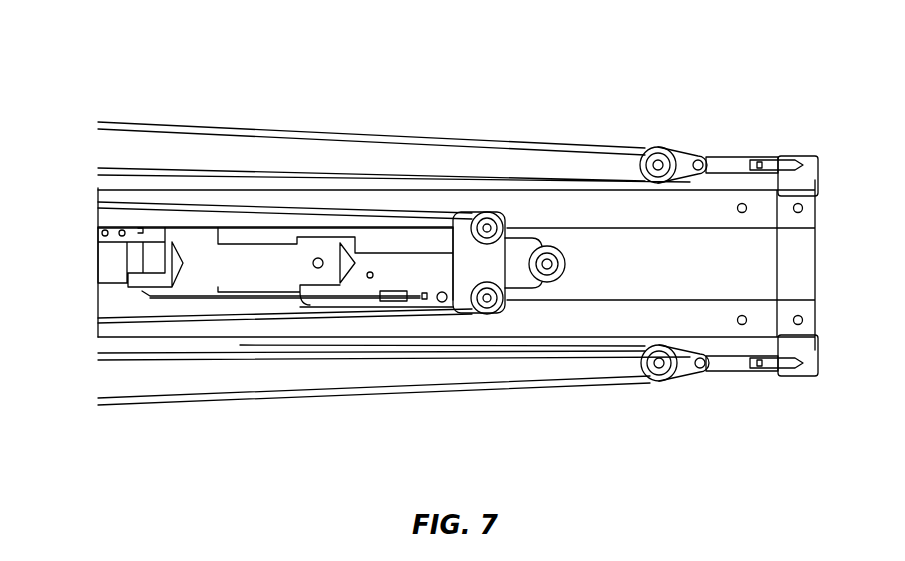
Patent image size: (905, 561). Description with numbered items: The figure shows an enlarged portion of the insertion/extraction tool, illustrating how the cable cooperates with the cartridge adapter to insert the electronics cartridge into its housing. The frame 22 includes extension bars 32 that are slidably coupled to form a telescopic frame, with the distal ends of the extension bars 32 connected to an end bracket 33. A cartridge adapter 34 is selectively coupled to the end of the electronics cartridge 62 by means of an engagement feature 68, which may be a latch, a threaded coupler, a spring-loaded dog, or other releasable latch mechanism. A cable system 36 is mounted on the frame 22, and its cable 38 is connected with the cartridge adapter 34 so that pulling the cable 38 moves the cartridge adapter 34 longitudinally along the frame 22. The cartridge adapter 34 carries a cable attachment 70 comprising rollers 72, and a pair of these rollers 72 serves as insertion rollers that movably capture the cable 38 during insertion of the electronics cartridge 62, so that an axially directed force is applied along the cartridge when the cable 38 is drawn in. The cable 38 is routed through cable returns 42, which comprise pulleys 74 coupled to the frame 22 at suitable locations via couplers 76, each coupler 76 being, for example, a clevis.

The frame 22 is at (118, 184).
The extension bars 32 is at (677, 308).
The end bracket 33 is at (808, 158).
The cartridge adapter 34 is at (331, 316).
The cable system 36 is at (163, 116).
The cable 38 is at (318, 130).
The cable returns 42 is at (666, 135).
The electronics cartridge 62 is at (89, 306).
The engagement feature 68 is at (203, 298).
The cable attachment 70 is at (582, 273).
The rollers 72 is at (490, 318).
The pulleys 74 is at (650, 372).
The couplers 76 is at (723, 373).